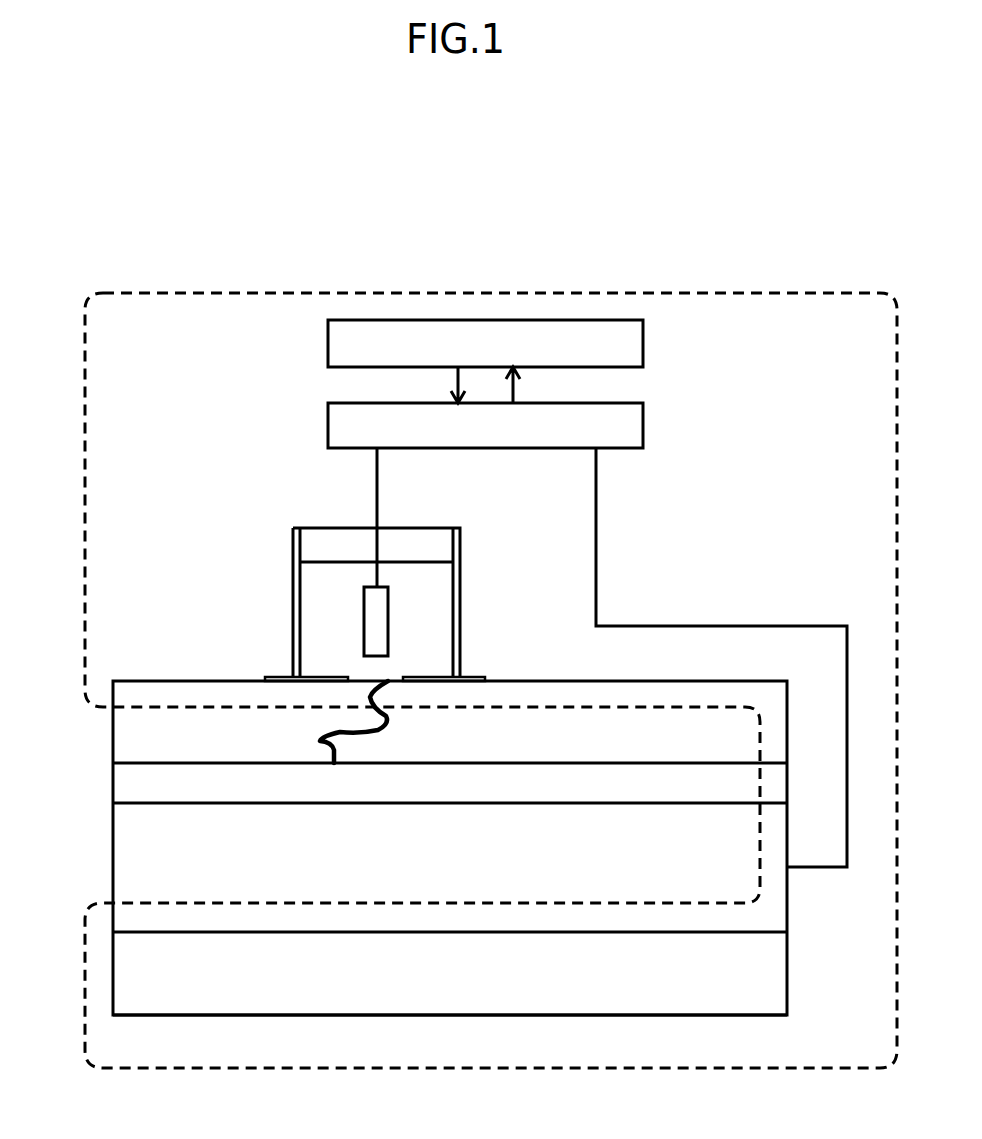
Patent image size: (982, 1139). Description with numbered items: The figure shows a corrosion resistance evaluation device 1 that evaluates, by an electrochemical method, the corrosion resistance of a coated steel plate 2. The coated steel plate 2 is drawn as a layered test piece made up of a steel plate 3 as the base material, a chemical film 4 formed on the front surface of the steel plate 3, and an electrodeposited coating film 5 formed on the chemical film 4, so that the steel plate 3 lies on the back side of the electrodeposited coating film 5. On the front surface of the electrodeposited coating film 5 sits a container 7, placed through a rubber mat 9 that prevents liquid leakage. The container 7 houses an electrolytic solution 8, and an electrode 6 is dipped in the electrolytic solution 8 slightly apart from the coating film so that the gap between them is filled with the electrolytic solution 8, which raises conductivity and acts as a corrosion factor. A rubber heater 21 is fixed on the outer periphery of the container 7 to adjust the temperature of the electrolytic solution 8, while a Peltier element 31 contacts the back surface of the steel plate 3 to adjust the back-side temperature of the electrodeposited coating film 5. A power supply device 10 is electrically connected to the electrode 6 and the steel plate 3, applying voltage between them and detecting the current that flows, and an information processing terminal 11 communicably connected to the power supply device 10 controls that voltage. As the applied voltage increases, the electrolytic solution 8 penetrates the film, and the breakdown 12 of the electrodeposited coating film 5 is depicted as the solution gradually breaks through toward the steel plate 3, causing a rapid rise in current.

The corrosion resistance evaluation device 1 is at (838, 293).
The coated steel plate 2 is at (62, 715).
The steel plate 3 is at (126, 838).
The chemical film 4 is at (126, 782).
The electrodeposited coating film 5 is at (126, 735).
The electrode 6 is at (377, 612).
The container 7 is at (312, 528).
The electrolytic solution 8 is at (314, 602).
The rubber mat 9 is at (420, 677).
The power supply device 10 is at (645, 425).
The information processing terminal 11 is at (645, 343).
The breakdown of the electrodeposited coating film 12 is at (388, 728).
The rubber heater 21 is at (460, 543).
The Peltier element 31 is at (778, 973).